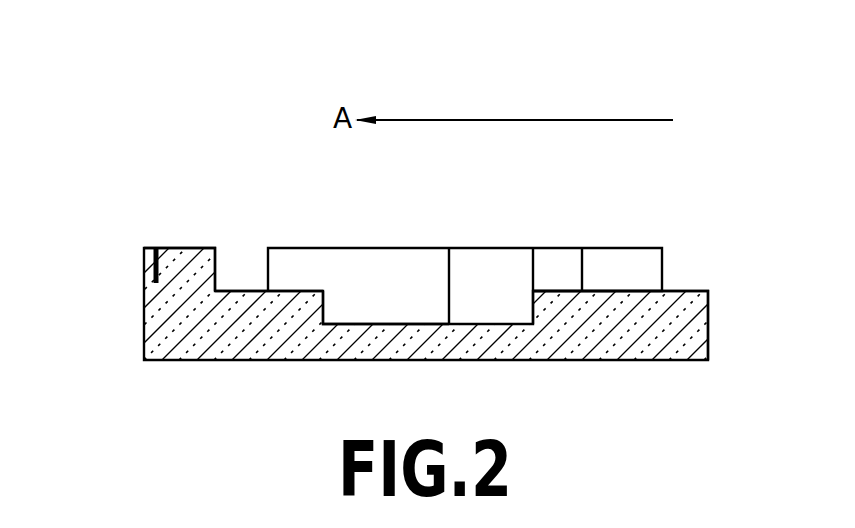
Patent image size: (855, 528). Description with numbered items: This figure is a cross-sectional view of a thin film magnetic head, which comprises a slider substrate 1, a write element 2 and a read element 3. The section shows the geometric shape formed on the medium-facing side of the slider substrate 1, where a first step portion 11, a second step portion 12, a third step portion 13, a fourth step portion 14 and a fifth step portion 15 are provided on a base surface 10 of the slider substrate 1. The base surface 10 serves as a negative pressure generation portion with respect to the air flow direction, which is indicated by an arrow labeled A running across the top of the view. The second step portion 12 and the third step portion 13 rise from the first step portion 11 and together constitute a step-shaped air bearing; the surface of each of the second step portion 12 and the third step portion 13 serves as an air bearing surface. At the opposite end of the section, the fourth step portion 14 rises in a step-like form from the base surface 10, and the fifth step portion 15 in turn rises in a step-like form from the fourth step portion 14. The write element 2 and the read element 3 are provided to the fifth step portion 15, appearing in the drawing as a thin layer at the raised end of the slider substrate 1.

The slider substrate 1 is at (192, 361).
The write element 2 is at (96, 270).
The read element 3 is at (154, 282).
The base surface 10 is at (427, 324).
The first step portion 11 is at (673, 291).
The second step portion 12 is at (465, 236).
The third step portion 13 is at (612, 250).
The fourth step portion 14 is at (256, 288).
The fifth step portion 15 is at (193, 247).